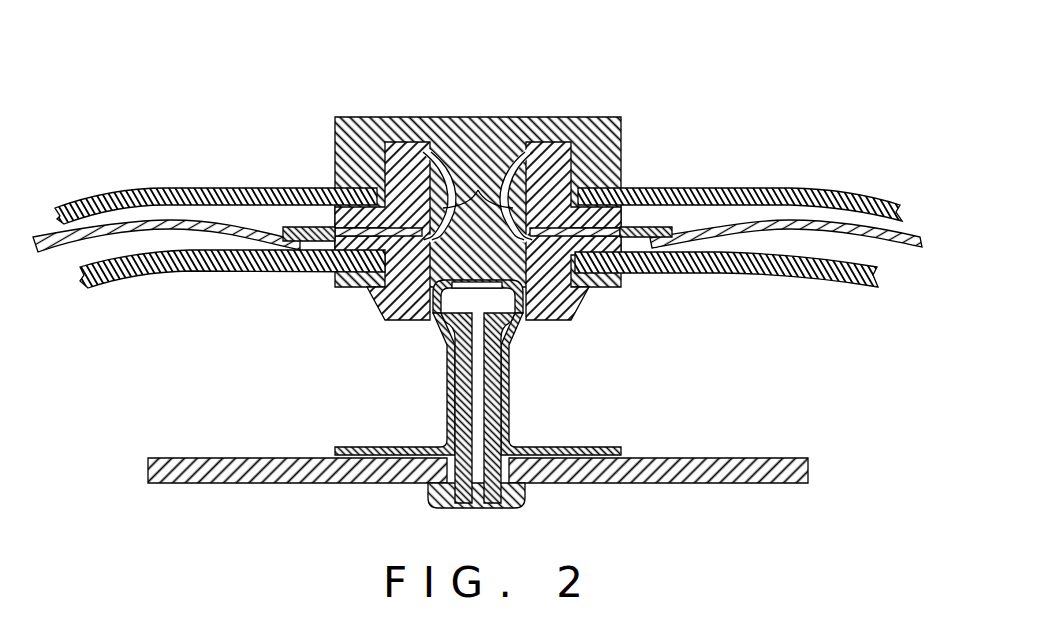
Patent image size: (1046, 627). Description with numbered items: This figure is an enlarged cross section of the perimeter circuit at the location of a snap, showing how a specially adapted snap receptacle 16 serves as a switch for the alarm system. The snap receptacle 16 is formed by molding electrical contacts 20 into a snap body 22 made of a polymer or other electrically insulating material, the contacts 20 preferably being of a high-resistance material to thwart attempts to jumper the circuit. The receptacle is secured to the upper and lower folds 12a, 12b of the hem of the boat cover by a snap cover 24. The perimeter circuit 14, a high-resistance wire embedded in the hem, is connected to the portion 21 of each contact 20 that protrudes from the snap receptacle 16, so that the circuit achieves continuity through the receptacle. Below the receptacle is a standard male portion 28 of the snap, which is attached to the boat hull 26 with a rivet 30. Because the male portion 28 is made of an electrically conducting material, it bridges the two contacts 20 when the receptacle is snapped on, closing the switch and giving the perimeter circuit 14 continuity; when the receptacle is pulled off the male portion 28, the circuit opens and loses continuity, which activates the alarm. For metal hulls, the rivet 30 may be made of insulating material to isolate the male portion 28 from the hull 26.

The upper fold 12a is at (853, 205).
The lower fold 12b is at (828, 277).
The perimeter circuit 14 is at (119, 250).
The snap receptacle 16 is at (408, 78).
The electrical contacts 20 is at (478, 190).
The portion of the contact 21 is at (296, 227).
The snap body 22 is at (395, 320).
The snap cover 24 is at (621, 128).
The boat hull 26 is at (228, 457).
The male portion of the snap 28 is at (582, 443).
The rivet 30 is at (525, 500).